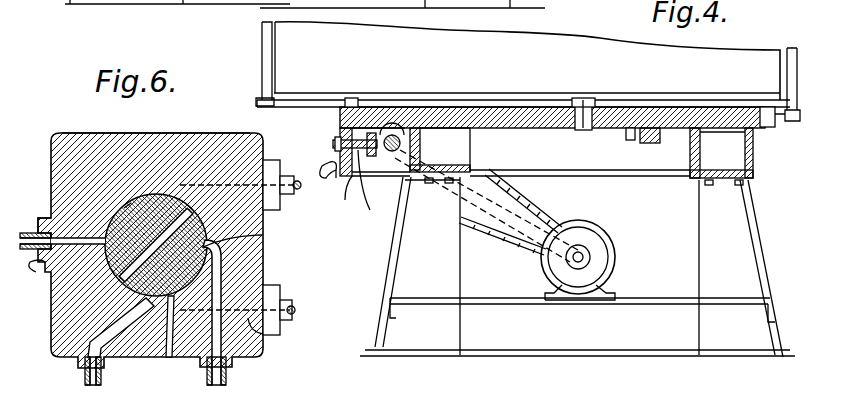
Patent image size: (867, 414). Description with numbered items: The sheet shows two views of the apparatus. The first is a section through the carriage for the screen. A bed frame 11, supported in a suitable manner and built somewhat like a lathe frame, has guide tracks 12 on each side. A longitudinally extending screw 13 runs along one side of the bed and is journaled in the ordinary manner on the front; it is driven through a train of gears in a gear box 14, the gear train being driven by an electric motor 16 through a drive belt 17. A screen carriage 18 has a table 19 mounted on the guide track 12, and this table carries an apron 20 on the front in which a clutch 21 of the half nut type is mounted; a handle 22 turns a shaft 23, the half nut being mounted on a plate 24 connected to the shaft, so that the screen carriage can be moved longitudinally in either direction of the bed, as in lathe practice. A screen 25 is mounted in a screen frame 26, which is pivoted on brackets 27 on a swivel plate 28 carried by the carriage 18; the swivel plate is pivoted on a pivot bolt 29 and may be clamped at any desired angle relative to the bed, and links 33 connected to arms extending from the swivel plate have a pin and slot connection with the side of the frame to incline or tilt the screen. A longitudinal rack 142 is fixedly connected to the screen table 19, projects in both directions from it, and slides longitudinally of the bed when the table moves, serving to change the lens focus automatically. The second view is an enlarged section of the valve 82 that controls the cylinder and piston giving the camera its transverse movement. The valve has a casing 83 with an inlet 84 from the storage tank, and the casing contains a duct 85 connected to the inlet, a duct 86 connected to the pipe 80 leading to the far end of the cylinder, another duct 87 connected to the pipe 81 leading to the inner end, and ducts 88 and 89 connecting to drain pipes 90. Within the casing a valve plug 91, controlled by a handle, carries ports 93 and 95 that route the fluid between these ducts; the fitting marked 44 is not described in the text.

In FIG. 4, the bed frame 11 is at (762, 176).
In FIG. 4, the guide tracks 12 is at (732, 138).
In FIG. 4, the screw 13 is at (393, 152).
In FIG. 4, the gear box 14 is at (397, 207).
In FIG. 4, the electric motor 16 is at (616, 262).
In FIG. 4, the drive belt 17 is at (520, 240).
In FIG. 4, the screen carriage 18 is at (732, 109).
In FIG. 4, the table 19 is at (770, 121).
In FIG. 4, the apron 20 is at (350, 199).
In FIG. 4, the clutch 21 is at (378, 130).
In FIG. 4, the handle 22 is at (324, 182).
In FIG. 4, the shaft 23 is at (342, 140).
In FIG. 4, the plate 24 is at (373, 189).
In FIG. 4, the screen 25 is at (665, 50).
In FIG. 4, the screen frame 26 is at (265, 46).
In FIG. 4, the brackets 27 is at (351, 100).
In FIG. 4, the swivel plate 28 is at (517, 107).
In FIG. 4, the pivot bolt 29 is at (596, 110).
In FIG. 4, the links 33 is at (261, 70).
In FIG. 4, the longitudinal rack 142 is at (648, 144).
In FIG. 6, the port 44 is at (200, 213).
In FIG. 6, the pipe 80 is at (88, 381).
In FIG. 6, the pipe 81 is at (225, 386).
In FIG. 6, the valve 82 is at (55, 357).
In FIG. 6, the casing 83 is at (78, 133).
In FIG. 6, the inlet 84 is at (61, 256).
In FIG. 6, the duct 85 is at (44, 216).
In FIG. 6, the duct 86 is at (113, 344).
In FIG. 6, the duct 87 is at (203, 370).
In FIG. 6, the duct 88 is at (270, 324).
In FIG. 6, the duct 89 is at (215, 241).
In FIG. 6, the drain pipes 90 is at (293, 307).
In FIG. 6, the valve plug 91 is at (154, 202).
In FIG. 6, the port 93 is at (128, 205).
In FIG. 6, the port 95 is at (186, 284).